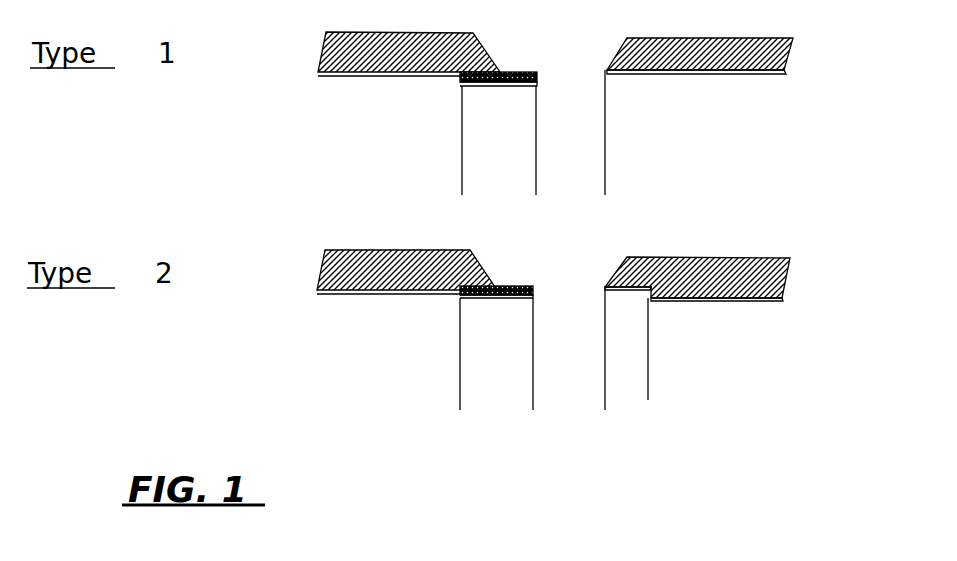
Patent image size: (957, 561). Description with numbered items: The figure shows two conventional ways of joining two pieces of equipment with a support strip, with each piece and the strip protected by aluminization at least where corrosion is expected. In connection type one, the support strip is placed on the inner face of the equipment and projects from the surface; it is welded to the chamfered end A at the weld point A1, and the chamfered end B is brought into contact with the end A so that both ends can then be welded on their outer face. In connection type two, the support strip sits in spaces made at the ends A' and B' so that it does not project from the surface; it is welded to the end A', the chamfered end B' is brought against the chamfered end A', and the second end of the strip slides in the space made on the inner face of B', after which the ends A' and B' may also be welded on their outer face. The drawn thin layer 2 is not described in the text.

The end of the equipment A is at (409, 37).
The chamfered end of the equipment B is at (700, 38).
The end of the equipment A' is at (406, 254).
The chamfered end of the equipment B' is at (697, 261).
The weld A1 is at (458, 78).
The thin coating layer 2 is at (510, 88).